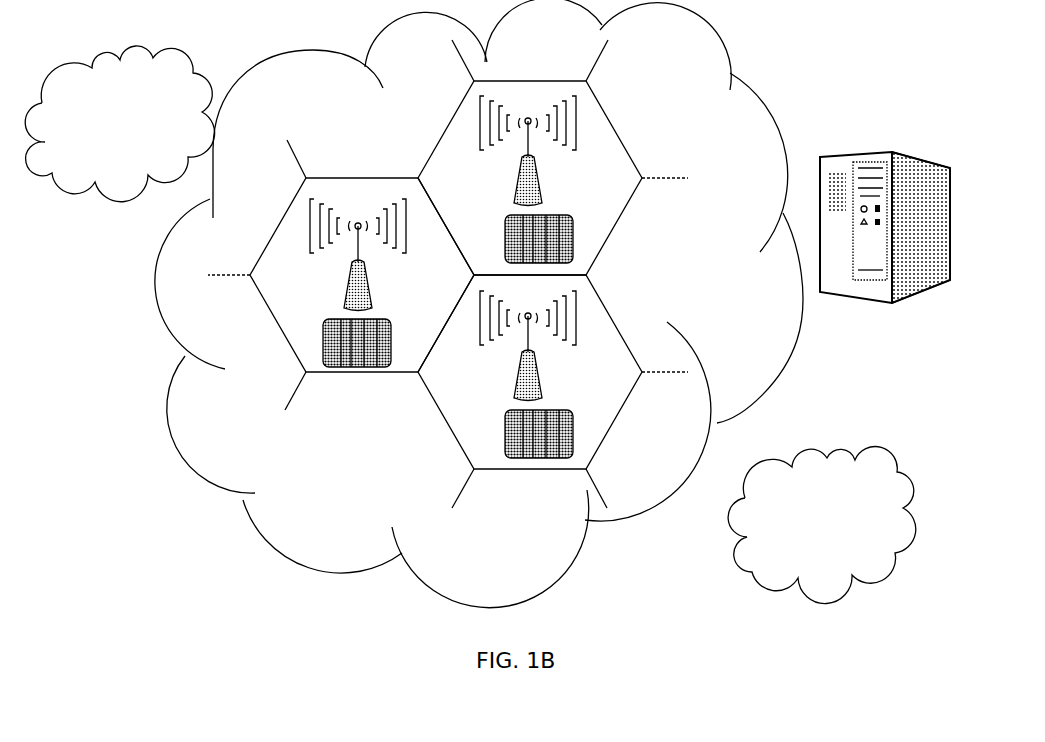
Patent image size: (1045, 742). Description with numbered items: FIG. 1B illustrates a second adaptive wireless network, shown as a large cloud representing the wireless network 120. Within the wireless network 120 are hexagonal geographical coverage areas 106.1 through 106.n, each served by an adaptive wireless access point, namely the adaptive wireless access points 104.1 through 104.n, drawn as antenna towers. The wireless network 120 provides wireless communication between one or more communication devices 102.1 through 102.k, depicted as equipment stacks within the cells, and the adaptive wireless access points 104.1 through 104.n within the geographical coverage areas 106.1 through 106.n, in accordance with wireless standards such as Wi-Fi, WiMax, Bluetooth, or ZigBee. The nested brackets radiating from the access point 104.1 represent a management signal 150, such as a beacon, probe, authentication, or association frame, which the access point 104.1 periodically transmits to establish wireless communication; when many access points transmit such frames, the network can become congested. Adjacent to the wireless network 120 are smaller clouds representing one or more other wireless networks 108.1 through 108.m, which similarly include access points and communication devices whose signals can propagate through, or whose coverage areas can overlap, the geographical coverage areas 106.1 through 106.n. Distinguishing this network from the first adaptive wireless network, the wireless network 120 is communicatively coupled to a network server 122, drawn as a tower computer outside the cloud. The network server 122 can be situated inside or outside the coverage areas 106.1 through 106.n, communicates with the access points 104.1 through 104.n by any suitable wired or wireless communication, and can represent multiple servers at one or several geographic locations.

The wireless network 120 is at (752, 85).
The other wireless network 108.1 is at (190, 60).
The other wireless network 108.m is at (840, 447).
The geographical coverage area 106.1 is at (443, 136).
The geographical coverage area 106.n is at (535, 473).
The adaptive wireless access point 104.1 is at (548, 163).
The adaptive wireless access point 104.n is at (545, 360).
The communication device 102.1 is at (582, 241).
The communication device 102.k is at (582, 434).
The management signal 150 is at (590, 127).
The network server 122 is at (885, 152).